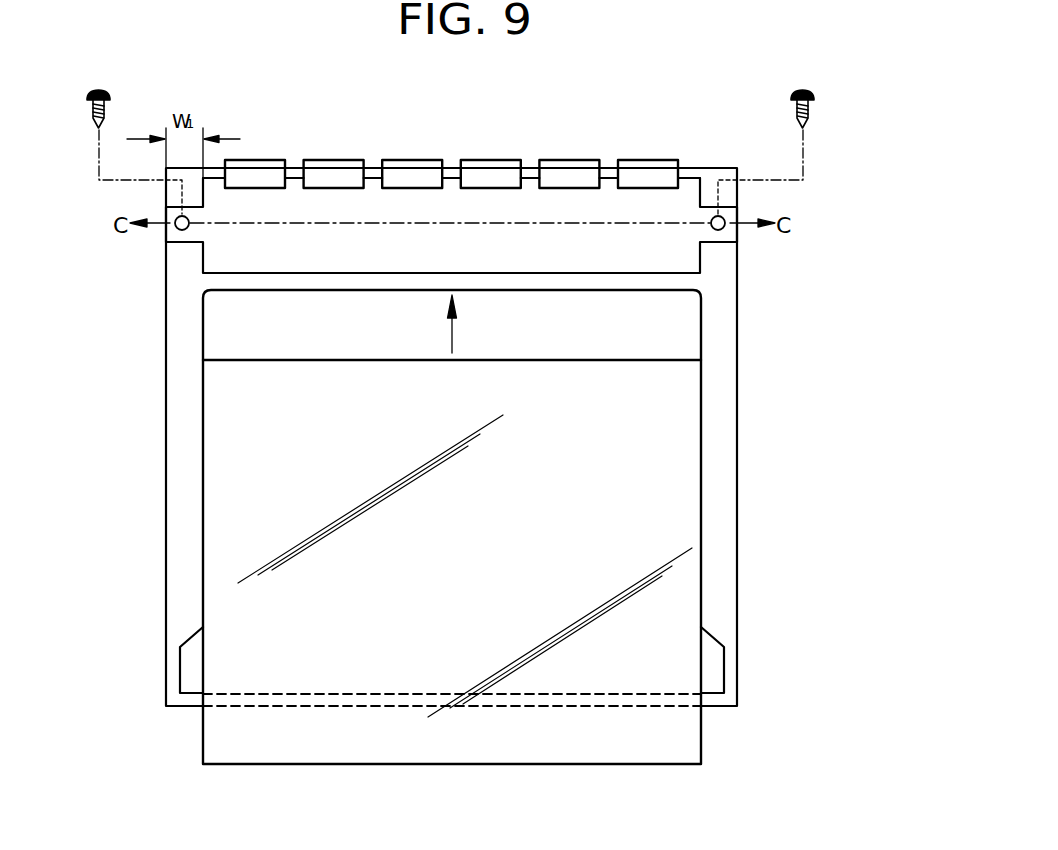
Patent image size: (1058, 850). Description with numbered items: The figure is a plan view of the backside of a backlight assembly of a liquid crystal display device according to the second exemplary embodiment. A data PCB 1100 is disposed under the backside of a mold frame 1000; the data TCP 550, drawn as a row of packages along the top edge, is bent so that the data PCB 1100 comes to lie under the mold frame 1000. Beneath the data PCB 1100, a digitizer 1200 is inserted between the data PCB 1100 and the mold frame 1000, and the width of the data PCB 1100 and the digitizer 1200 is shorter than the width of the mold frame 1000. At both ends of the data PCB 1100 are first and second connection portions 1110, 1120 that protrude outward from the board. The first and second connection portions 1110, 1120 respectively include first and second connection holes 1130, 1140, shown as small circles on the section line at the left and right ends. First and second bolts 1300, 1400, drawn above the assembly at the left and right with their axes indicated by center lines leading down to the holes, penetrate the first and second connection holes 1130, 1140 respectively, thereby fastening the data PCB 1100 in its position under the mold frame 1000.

The mold frame 1000 is at (183, 489).
The data PCB 1100 is at (687, 192).
The first connection portion 1110 is at (175, 218).
The second connection portion 1120 is at (733, 216).
The first connection hole 1130 is at (178, 230).
The second connection hole 1140 is at (724, 230).
The digitizer 1200 is at (693, 740).
The first bolt 1300 is at (107, 96).
The second bolt 1400 is at (795, 96).
The data TCP 550 is at (637, 166).